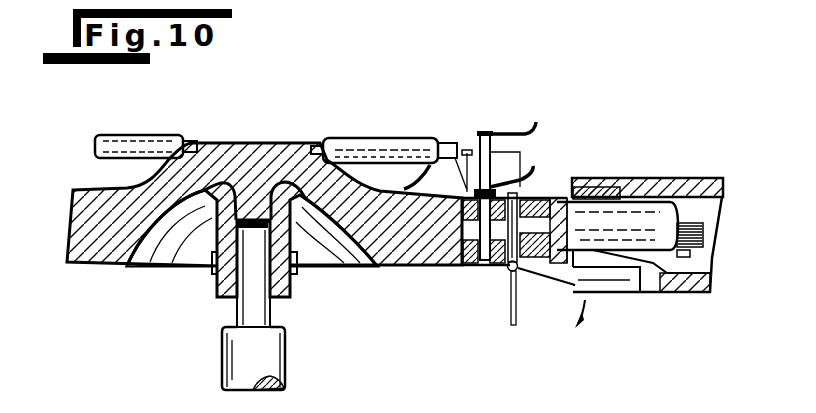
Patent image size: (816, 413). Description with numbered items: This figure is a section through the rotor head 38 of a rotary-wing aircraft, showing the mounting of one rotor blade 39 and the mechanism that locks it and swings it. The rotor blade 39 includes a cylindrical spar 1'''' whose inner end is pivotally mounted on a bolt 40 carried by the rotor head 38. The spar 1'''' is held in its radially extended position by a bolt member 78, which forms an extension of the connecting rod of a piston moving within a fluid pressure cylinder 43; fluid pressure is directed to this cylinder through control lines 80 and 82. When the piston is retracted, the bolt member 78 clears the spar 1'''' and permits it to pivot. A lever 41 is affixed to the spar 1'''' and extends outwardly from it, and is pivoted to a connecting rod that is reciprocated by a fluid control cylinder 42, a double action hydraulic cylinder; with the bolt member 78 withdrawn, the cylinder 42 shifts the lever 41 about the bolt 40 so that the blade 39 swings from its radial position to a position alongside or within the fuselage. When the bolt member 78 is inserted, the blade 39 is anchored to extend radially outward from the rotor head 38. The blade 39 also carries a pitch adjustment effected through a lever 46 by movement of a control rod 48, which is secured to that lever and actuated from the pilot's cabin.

The rotor head 38 is at (247, 153).
The fluid control cylinder 42 is at (388, 147).
The fluid pressure cylinder 43 is at (487, 130).
The control line 80 is at (530, 128).
The control line 82 is at (533, 167).
The lever 41 is at (547, 190).
The bolt member 78 is at (460, 232).
The bolt 40 is at (507, 268).
The control rod 48 is at (518, 307).
The rotor blade 39 is at (637, 178).
The spar 1'''' is at (720, 226).
The lever 46 is at (613, 283).